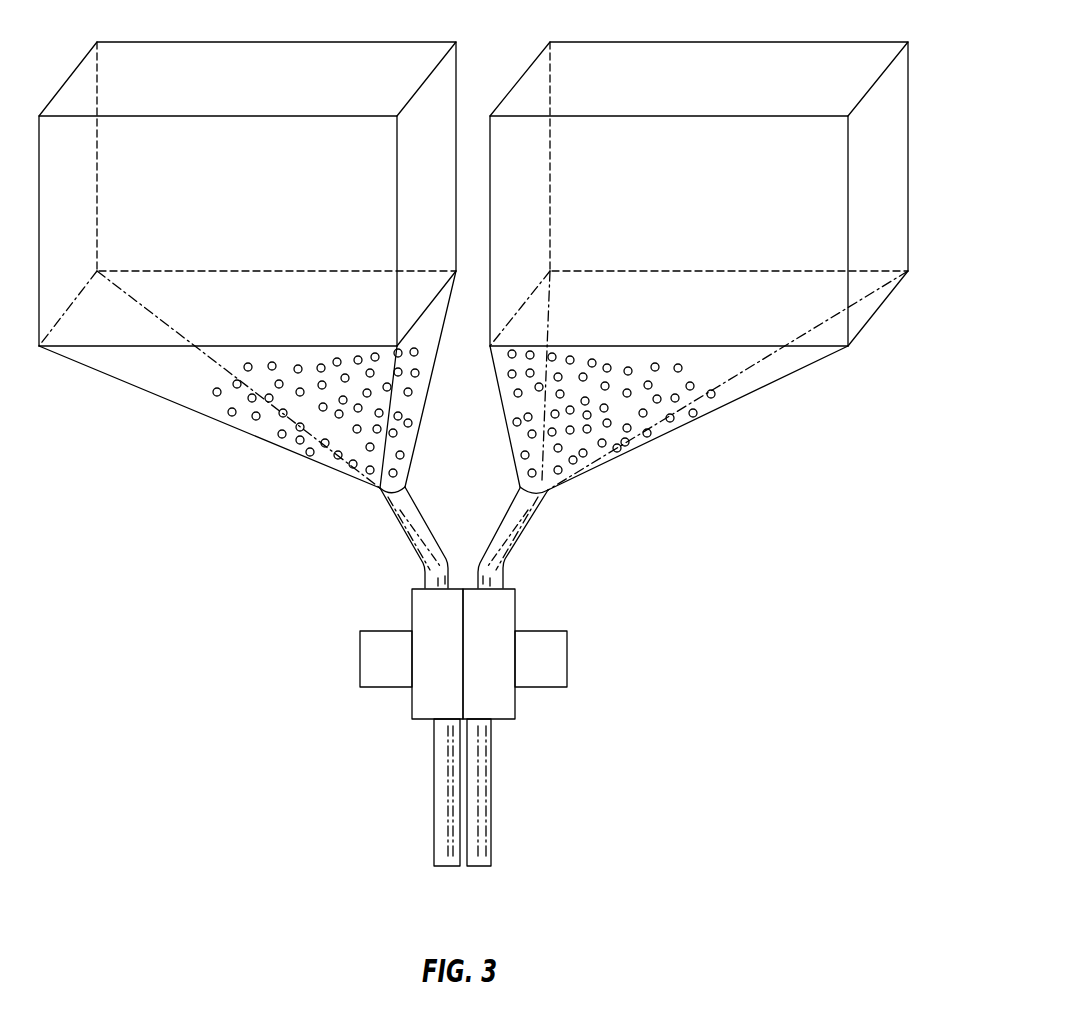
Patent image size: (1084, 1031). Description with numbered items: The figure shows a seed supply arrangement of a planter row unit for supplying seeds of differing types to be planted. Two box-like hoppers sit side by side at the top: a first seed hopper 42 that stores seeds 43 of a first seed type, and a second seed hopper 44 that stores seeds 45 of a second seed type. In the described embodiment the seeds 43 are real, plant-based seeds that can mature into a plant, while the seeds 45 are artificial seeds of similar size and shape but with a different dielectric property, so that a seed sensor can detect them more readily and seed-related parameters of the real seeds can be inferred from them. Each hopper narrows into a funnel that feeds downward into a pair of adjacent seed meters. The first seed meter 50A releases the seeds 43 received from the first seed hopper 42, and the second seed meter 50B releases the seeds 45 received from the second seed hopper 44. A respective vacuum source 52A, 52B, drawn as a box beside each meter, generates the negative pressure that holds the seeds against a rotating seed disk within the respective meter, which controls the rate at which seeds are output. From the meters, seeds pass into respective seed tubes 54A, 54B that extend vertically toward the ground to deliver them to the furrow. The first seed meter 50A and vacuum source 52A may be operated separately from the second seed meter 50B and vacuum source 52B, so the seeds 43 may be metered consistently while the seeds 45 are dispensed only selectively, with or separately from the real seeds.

The first seed hopper 42 is at (60, 78).
The seeds of a first seed type 43 is at (256, 420).
The second seed hopper 44 is at (915, 70).
The seeds of a second seed type 45 is at (608, 450).
The first seed meter 50A is at (456, 672).
The second seed meter 50B is at (508, 672).
The first vacuum source 52A is at (405, 672).
The second vacuum source 52B is at (560, 672).
The first seed tube 54A is at (434, 793).
The second seed tube 54B is at (491, 793).